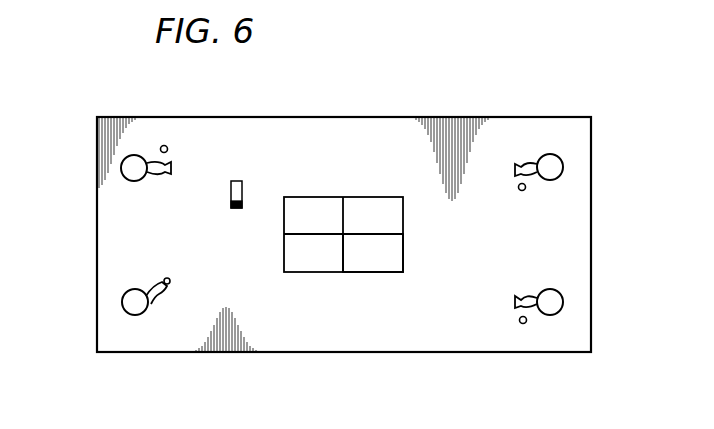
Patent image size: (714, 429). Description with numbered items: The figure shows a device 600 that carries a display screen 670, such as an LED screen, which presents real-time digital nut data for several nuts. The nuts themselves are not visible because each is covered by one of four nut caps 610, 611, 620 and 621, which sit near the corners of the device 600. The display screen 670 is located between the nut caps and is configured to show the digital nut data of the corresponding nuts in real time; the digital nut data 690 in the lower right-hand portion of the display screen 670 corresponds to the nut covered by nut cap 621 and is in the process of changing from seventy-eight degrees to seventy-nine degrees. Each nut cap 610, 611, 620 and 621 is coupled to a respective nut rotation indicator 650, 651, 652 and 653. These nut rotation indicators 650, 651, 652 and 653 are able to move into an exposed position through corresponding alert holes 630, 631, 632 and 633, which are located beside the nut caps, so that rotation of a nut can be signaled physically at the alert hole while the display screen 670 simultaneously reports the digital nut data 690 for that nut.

The device 600 is at (112, 90).
The nut cap 610 is at (121, 302).
The nut cap 611 is at (121, 168).
The nut cap 620 is at (564, 167).
The nut cap 621 is at (564, 302).
The alert hole 630 is at (169, 284).
The alert hole 631 is at (164, 145).
The alert hole 632 is at (525, 190).
The alert hole 633 is at (521, 324).
The nut rotation indicator 650 is at (151, 280).
The nut rotation indicator 651 is at (162, 178).
The nut rotation indicator 652 is at (525, 159).
The nut rotation indicator 653 is at (530, 307).
The display screen 670 is at (293, 203).
The digital nut data 690 is at (375, 273).